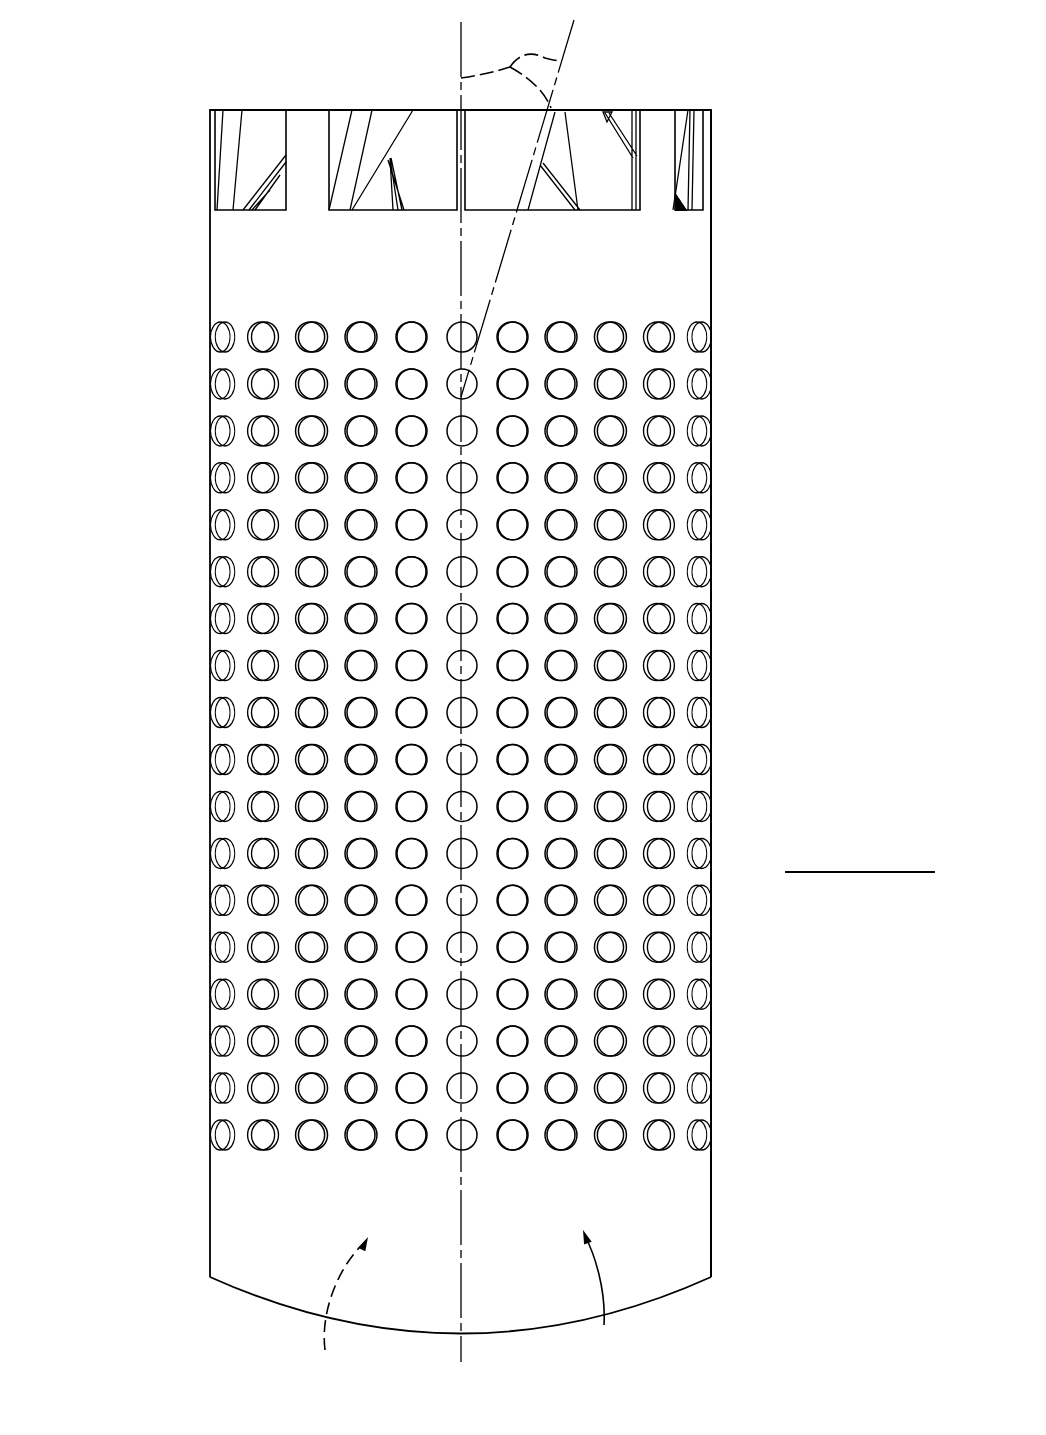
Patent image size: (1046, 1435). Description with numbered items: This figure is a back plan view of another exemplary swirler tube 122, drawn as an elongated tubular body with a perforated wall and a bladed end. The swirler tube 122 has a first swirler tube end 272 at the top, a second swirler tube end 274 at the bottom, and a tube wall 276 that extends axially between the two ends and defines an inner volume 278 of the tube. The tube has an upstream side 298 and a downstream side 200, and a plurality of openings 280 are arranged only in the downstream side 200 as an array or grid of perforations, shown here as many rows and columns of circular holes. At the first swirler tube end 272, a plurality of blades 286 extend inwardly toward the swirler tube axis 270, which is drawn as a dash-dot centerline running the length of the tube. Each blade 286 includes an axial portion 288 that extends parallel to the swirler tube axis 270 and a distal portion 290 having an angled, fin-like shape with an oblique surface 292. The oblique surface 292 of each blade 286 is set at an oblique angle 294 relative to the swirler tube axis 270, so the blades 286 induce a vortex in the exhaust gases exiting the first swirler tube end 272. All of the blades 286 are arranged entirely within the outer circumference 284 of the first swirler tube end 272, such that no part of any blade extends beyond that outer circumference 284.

The sand screen assembly 122 is at (138, 93).
The downstream side 200 is at (600, 1294).
The swirler tube axis 270 is at (457, 36).
The first swirler tube end 272 is at (205, 224).
The second swirler tube end 274 is at (200, 1272).
The tube wall 276 is at (643, 276).
The inner volume 278 is at (336, 1309).
The openings 280 is at (655, 525).
The outer circumference 284 is at (396, 220).
The blades 286 is at (306, 102).
The axial portion 288 is at (290, 150).
The distal portion 290 is at (257, 128).
The oblique surface 292 is at (380, 142).
The oblique angle 294 is at (560, 60).
The upstream side 298 is at (718, 1185).